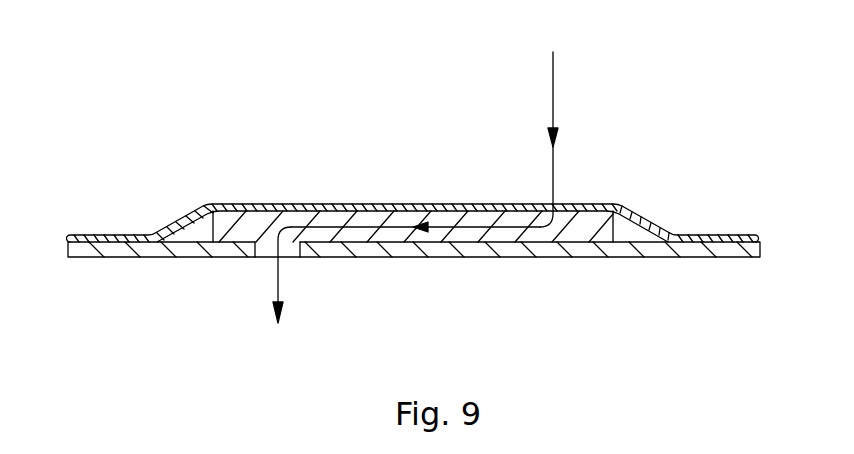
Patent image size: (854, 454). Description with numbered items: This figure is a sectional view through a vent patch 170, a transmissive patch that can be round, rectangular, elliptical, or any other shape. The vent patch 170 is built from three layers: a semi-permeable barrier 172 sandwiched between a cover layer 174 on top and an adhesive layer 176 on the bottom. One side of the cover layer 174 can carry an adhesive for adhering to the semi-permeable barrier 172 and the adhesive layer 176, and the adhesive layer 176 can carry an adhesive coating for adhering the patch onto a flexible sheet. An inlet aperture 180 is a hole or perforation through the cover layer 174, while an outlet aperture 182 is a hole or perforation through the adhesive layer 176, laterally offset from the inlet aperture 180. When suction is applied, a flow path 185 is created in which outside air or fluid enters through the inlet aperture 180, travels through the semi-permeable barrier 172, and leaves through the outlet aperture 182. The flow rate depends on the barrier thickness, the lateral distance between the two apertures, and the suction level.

The vent patch 170 is at (413, 187).
The semi-permeable barrier 172 is at (260, 220).
The cover layer 174 is at (182, 222).
The adhesive layer 176 is at (642, 252).
The inlet aperture 180 is at (558, 207).
The outlet aperture 182 is at (268, 252).
The flow path 185 is at (450, 227).